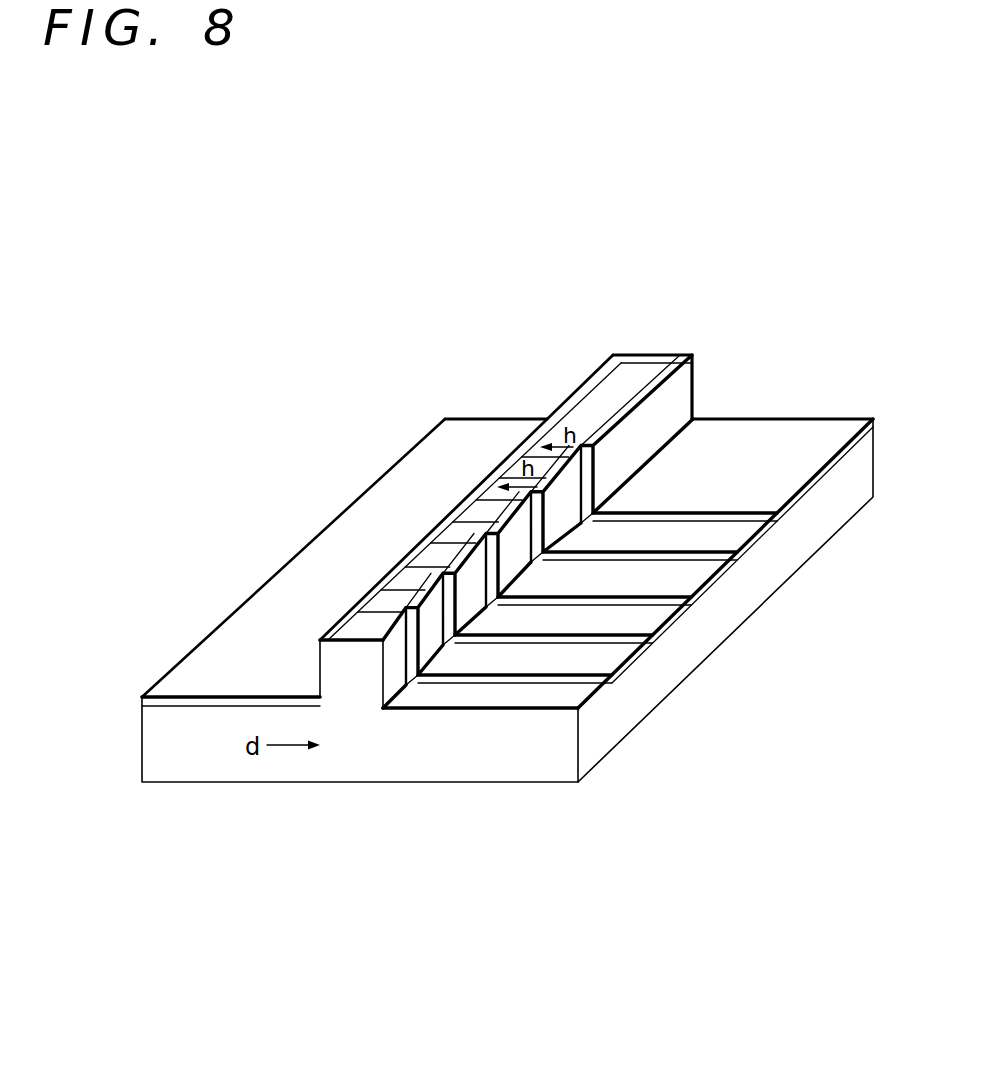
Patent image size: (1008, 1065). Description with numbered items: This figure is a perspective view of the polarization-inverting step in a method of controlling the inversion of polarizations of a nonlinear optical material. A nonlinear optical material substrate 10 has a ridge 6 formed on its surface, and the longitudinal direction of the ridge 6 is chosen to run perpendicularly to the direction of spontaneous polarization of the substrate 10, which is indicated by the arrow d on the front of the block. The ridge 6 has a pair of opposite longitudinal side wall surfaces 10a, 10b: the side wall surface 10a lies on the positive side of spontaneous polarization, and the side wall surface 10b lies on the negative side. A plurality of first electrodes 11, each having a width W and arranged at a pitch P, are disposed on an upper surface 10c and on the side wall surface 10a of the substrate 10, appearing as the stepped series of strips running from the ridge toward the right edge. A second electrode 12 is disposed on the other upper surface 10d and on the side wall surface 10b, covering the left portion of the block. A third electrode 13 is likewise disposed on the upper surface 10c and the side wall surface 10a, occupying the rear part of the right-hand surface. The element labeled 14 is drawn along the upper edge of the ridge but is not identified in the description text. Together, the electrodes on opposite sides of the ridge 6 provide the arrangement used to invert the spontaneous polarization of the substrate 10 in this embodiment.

The ridge 6 is at (360, 678).
The nonlinear optical material substrate 10 is at (556, 748).
The side wall surface 10a is at (570, 498).
The side wall surface 10b is at (493, 487).
The upper surface 10c is at (645, 620).
The upper surface 10d is at (208, 723).
The first electrodes 11 is at (712, 551).
The second electrode 12 is at (258, 678).
The third electrode 13 is at (797, 437).
The edge line 14 is at (485, 480).